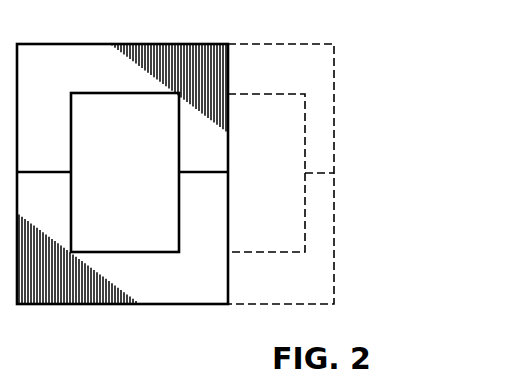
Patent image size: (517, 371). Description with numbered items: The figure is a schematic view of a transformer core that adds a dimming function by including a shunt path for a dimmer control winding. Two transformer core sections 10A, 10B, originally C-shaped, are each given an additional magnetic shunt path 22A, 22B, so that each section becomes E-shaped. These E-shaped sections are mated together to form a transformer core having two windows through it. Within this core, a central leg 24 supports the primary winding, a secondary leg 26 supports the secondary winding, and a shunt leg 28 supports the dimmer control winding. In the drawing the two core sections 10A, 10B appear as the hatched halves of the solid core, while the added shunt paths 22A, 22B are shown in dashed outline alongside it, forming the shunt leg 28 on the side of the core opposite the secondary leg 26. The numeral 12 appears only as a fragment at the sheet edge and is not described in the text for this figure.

The transformer core section 10A is at (106, 75).
The transformer core section 10B is at (144, 289).
The magnetic core 12 is at (77, 363).
The magnetic shunt path 22A is at (279, 80).
The magnetic shunt path 22B is at (282, 287).
The central leg 24 is at (213, 163).
The secondary leg 26 is at (57, 163).
The shunt leg 28 is at (322, 163).